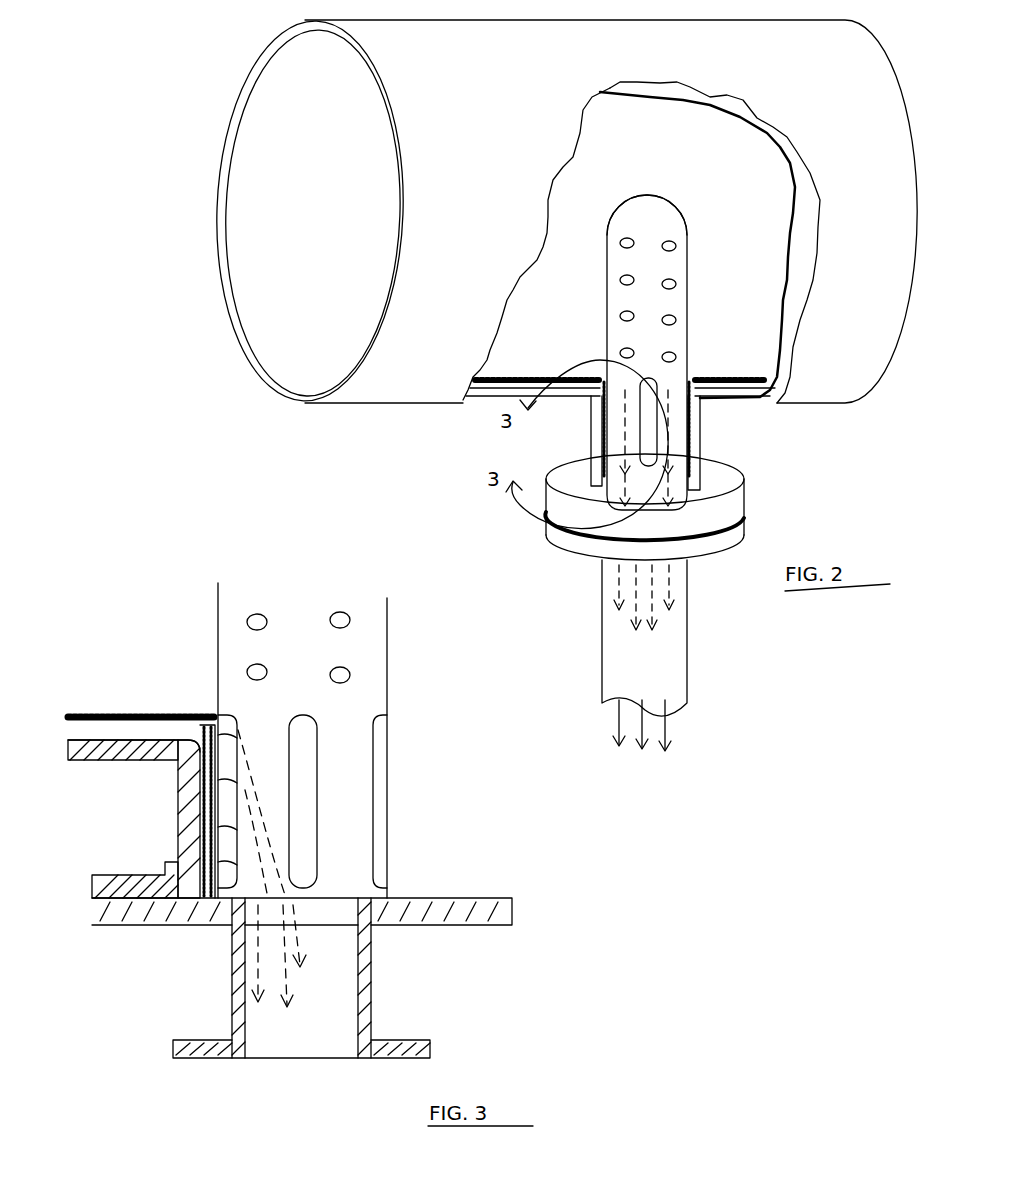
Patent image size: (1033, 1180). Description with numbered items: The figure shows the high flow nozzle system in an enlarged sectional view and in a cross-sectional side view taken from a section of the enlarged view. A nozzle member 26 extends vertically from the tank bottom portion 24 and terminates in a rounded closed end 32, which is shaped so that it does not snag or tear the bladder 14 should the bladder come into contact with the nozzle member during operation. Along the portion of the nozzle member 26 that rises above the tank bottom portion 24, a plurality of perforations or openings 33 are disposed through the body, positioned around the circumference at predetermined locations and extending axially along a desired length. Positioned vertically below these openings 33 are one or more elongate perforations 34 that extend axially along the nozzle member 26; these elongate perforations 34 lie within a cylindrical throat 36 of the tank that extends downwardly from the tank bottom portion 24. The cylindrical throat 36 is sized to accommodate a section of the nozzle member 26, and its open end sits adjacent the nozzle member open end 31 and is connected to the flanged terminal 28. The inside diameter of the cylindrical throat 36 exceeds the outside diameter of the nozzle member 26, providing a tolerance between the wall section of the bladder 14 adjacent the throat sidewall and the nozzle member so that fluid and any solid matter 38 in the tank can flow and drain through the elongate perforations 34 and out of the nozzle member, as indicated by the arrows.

In FIG. 3, the bladder 14 is at (175, 742).
In FIG. 2, the tank bottom portion 24 is at (563, 211).
In FIG. 3, the tank bottom portion 24 is at (84, 762).
In FIG. 2, the nozzle member 26 is at (690, 338).
In FIG. 3, the nozzle member 26 is at (218, 640).
In FIG. 2, the flanged terminal 28 is at (745, 480).
In FIG. 3, the flanged terminal 28 is at (122, 888).
In FIG. 3, the nozzle member open end 31 is at (317, 902).
In FIG. 2, the closed end 32 is at (645, 196).
In FIG. 2, the openings 33 is at (620, 314).
In FIG. 3, the openings 33 is at (342, 618).
In FIG. 2, the elongate perforations 34 is at (657, 447).
In FIG. 3, the elongate perforations 34 is at (305, 736).
In FIG. 2, the cylindrical throat 36 is at (591, 430).
In FIG. 3, the cylindrical throat 36 is at (186, 803).
In FIG. 2, the solid matter 38 is at (603, 380).
In FIG. 3, the solid matter 38 is at (141, 807).